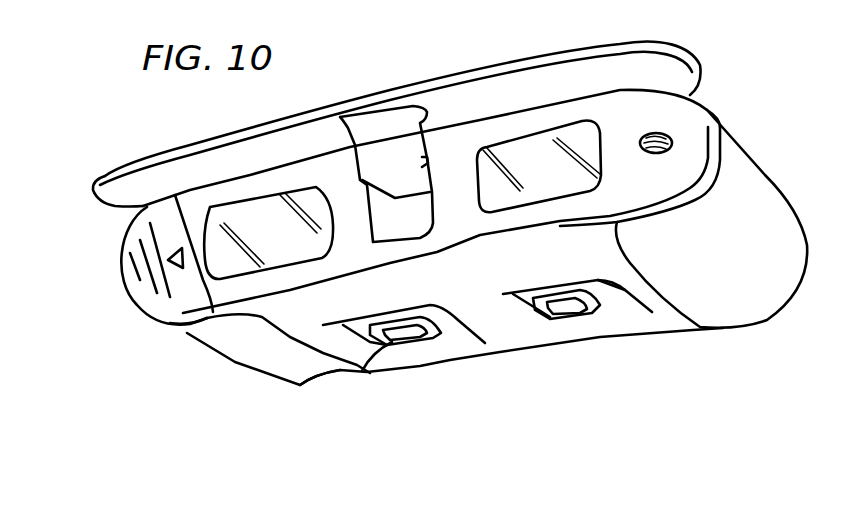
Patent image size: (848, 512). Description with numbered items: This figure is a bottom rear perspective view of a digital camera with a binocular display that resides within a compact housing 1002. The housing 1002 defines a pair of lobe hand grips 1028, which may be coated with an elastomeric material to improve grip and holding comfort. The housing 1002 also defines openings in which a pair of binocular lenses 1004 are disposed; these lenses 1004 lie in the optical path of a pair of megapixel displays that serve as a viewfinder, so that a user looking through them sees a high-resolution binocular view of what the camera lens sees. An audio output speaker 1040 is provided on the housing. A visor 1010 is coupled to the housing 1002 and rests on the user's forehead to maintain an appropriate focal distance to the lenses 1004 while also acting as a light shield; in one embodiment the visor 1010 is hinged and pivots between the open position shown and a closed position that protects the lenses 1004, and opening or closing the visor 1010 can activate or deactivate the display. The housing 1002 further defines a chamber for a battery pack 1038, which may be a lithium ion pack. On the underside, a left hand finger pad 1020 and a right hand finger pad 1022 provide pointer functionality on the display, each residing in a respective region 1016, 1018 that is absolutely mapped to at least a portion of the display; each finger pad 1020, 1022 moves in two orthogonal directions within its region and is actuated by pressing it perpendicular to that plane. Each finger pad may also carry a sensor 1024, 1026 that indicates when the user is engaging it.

The housing 1002 is at (503, 333).
The binocular lenses 1004 is at (545, 177).
The visor 1010 is at (98, 180).
The region 1016 is at (448, 326).
The region 1018 is at (625, 297).
The left hand finger pad 1020 is at (300, 386).
The right hand finger pad 1022 is at (545, 313).
The sensor 1024 is at (407, 330).
The sensor 1026 is at (575, 305).
The lobe hand grips 1028 is at (190, 332).
The battery pack 1038 is at (150, 297).
The audio output speaker 1040 is at (672, 141).